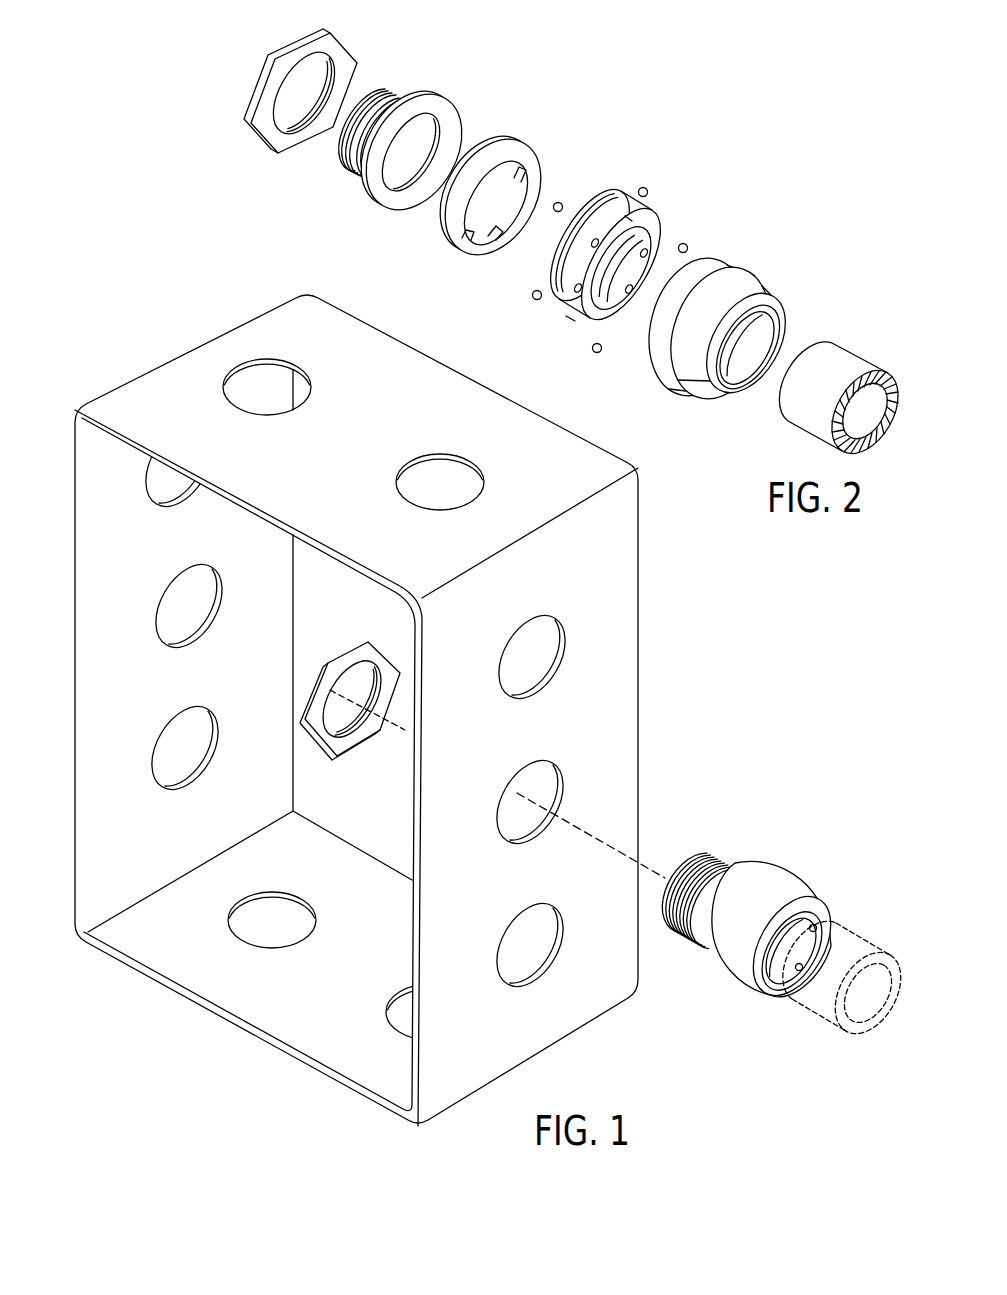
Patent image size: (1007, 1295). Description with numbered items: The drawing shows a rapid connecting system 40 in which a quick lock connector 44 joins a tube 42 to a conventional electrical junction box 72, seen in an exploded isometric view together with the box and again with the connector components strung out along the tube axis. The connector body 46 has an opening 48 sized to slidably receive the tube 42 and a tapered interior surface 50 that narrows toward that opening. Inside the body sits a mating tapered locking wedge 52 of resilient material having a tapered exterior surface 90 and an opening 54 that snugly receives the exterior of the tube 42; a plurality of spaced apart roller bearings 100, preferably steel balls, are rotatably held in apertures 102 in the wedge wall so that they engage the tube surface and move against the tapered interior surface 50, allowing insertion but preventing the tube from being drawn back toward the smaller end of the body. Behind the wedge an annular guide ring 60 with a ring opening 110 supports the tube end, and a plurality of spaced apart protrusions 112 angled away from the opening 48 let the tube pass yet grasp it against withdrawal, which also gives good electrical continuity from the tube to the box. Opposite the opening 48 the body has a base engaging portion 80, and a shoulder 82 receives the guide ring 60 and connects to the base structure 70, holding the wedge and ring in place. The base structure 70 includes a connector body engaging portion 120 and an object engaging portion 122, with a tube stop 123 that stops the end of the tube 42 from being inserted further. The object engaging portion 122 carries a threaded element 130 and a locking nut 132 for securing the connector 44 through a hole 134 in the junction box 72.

In FIG. 1, the rapid connecting system 40 is at (785, 904).
In FIG. 2, the rapid connecting system 40 is at (578, 235).
In FIG. 1, the tube 42 is at (827, 1017).
In FIG. 2, the tube 42 is at (849, 368).
In FIG. 1, the quick lock connector 44 is at (805, 931).
In FIG. 2, the quick lock connector 44 is at (740, 326).
In FIG. 1, the connector body 46 is at (788, 885).
In FIG. 2, the connector body 46 is at (750, 283).
In FIG. 1, the opening 48 is at (822, 930).
In FIG. 2, the opening 48 is at (785, 328).
In FIG. 2, the tapered interior surface 50 is at (747, 362).
In FIG. 1, the tapered locking wedge 52 is at (780, 988).
In FIG. 2, the tapered locking wedge 52 is at (607, 217).
In FIG. 2, the opening 54 is at (593, 303).
In FIG. 2, the annular guide ring 60 is at (493, 191).
In FIG. 1, the base structure 70 is at (688, 875).
In FIG. 2, the base structure 70 is at (399, 97).
In FIG. 1, the electrical junction box 72 is at (640, 723).
In FIG. 1, the base engaging portion 80 is at (764, 862).
In FIG. 2, the base engaging portion 80 is at (719, 265).
In FIG. 2, the shoulder 82 is at (426, 143).
In FIG. 2, the tapered exterior surface 90 is at (585, 269).
In FIG. 2, the roller bearings 100 is at (603, 375).
In FIG. 2, the apertures 102 is at (629, 292).
In FIG. 2, the ring opening 110 is at (505, 208).
In FIG. 2, the protrusions 112 is at (508, 225).
In FIG. 2, the connector body engaging portion 120 is at (440, 127).
In FIG. 1, the object engaging portion 122 is at (674, 940).
In FIG. 2, the object engaging portion 122 is at (383, 88).
In FIG. 2, the tube stop 123 is at (447, 128).
In FIG. 1, the threaded element 130 is at (700, 854).
In FIG. 1, the locking nut 132 is at (345, 747).
In FIG. 2, the locking nut 132 is at (340, 58).
In FIG. 1, the hole 134 is at (560, 783).